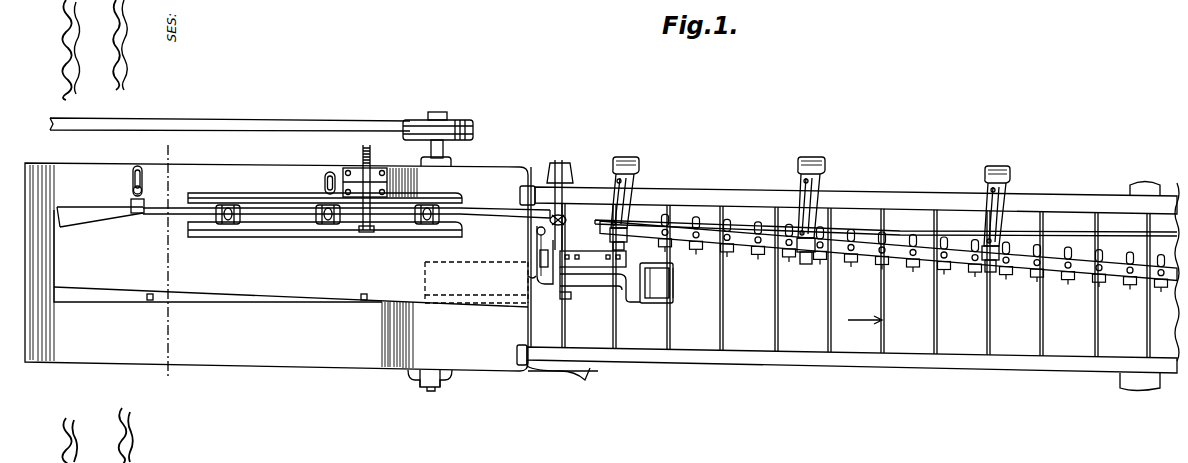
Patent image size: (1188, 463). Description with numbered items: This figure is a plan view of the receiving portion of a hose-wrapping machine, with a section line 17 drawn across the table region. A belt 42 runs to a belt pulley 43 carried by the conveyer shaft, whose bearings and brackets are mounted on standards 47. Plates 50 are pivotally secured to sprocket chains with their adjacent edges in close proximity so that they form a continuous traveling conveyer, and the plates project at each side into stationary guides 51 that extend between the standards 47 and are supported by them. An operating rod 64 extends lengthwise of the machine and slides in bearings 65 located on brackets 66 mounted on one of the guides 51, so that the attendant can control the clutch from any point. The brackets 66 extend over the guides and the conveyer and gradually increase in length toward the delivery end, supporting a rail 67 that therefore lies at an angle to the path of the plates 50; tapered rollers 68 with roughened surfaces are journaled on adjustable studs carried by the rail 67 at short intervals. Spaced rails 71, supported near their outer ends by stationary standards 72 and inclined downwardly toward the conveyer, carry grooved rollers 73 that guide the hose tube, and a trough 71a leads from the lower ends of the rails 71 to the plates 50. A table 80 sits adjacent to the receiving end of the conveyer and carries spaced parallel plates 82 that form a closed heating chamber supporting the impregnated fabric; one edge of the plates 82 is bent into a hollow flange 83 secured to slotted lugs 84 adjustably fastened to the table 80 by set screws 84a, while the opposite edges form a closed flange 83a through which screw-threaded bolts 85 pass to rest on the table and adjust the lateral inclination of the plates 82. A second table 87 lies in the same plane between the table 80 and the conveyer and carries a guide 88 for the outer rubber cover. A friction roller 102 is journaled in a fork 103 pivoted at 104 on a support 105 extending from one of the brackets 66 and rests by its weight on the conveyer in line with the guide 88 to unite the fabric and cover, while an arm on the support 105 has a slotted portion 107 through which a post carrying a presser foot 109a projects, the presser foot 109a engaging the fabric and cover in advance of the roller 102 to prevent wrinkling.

The section line 17- 17 is at (178, 271).
The belt 42 is at (326, 122).
The belt pulley 43 is at (473, 126).
The standards 47 is at (1134, 388).
The plates 50 is at (856, 280).
The stationary guides 51 is at (900, 198).
The operating rod 64 is at (1102, 233).
The bearings 65 is at (803, 195).
The brackets 66 is at (637, 183).
The rail 67 is at (897, 254).
The tapered or conical rollers 68 is at (752, 257).
The spaced rails 71 is at (268, 198).
The trough 71a is at (486, 209).
The stationary standards 72 is at (358, 170).
The grooved rollers 73 is at (333, 225).
The table 80 is at (249, 358).
The spaced parallel plates 82 is at (218, 256).
The hollow flange 83 is at (98, 214).
The closed flange 83a is at (298, 299).
The slotted lugs 84 is at (145, 196).
The set screws 84a is at (133, 188).
The screw-threaded bolts 85 is at (148, 301).
The second table 87 is at (487, 362).
The guide 88 is at (483, 263).
The friction roller 102 is at (673, 291).
The fork 103 is at (603, 290).
The pivot 104 is at (565, 299).
The support 105 is at (591, 256).
The slotted portion 107 is at (543, 285).
The presser foot 109a is at (528, 277).